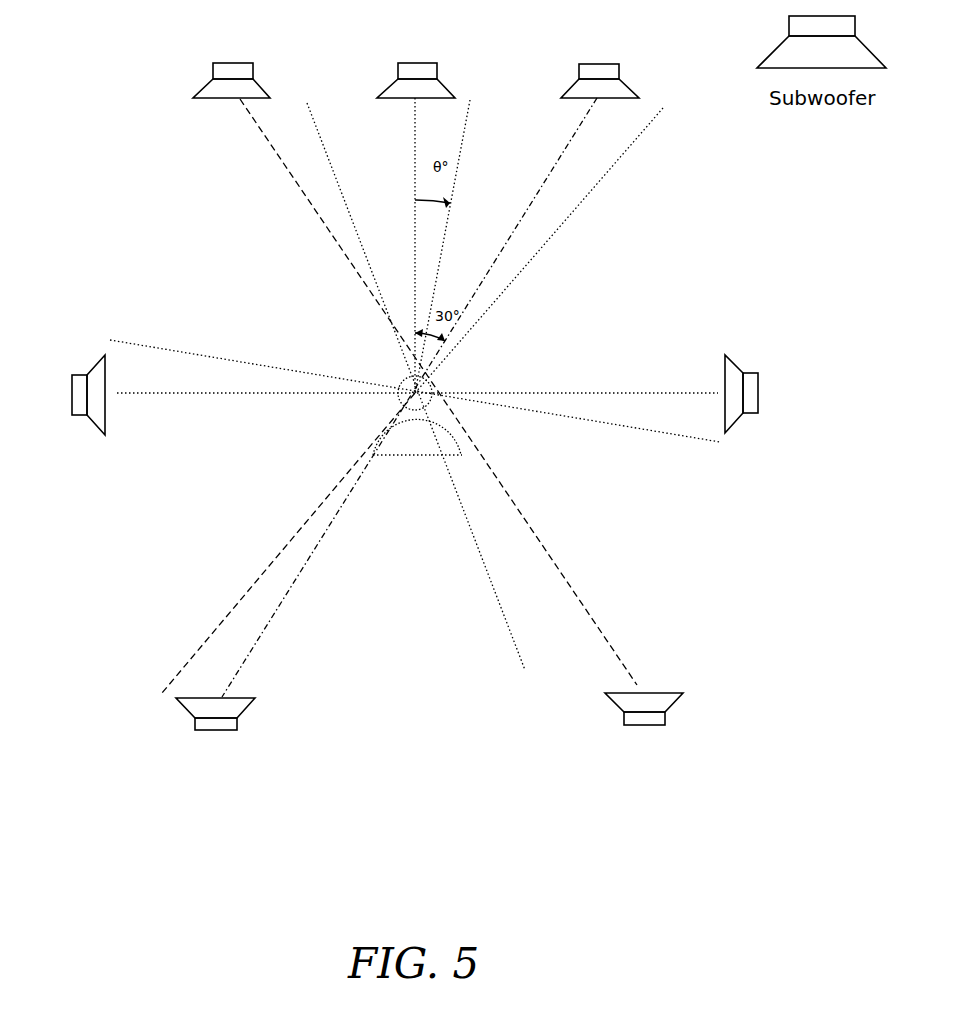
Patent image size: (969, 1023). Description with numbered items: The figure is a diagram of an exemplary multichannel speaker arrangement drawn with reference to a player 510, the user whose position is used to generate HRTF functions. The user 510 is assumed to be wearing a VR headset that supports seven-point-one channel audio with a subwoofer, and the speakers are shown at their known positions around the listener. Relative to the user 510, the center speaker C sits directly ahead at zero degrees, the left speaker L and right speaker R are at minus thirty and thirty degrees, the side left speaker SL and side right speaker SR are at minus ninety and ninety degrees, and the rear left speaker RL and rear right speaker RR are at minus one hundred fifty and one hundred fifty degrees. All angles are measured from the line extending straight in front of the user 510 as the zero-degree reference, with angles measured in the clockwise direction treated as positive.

The player 510 is at (438, 458).
The left speaker L is at (228, 60).
The center speaker C is at (416, 62).
The right speaker R is at (600, 65).
The side left speaker SL is at (57, 395).
The side right speaker SR is at (772, 394).
The rear left speaker RL is at (215, 740).
The rear right speaker RR is at (644, 733).